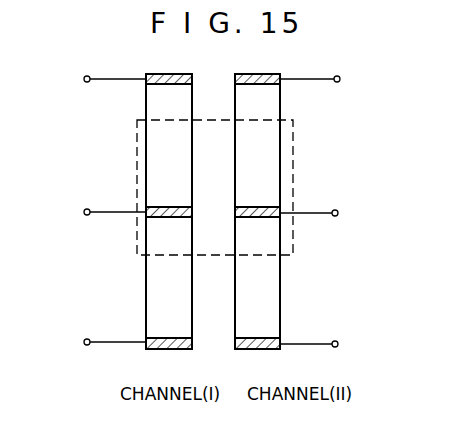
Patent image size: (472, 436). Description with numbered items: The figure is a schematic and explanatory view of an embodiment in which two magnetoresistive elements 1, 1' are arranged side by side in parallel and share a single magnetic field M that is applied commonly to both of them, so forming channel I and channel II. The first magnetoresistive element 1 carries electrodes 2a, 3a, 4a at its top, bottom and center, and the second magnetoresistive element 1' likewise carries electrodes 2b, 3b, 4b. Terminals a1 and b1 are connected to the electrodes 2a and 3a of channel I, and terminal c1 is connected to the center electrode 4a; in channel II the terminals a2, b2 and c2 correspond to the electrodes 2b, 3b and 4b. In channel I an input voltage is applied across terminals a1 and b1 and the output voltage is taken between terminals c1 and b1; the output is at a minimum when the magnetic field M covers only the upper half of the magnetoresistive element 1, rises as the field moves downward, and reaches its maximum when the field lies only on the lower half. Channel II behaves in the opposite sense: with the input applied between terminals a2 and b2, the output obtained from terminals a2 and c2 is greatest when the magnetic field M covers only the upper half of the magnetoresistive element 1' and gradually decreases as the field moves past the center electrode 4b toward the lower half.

The magnetoresistive element 1 is at (153, 211).
The magnetoresistive element 1' is at (270, 211).
The electrode 2a is at (150, 76).
The electrode 2b is at (277, 76).
The electrode 3a is at (148, 350).
The electrode 3b is at (277, 350).
The electrode 4a is at (150, 210).
The center electrode 4b is at (280, 208).
The magnetic field M is at (291, 151).
The terminal a1 is at (103, 80).
The terminal a2 is at (324, 80).
The terminal b1 is at (103, 343).
The terminal b2 is at (323, 345).
The terminal c1 is at (103, 212).
The terminal c2 is at (323, 213).